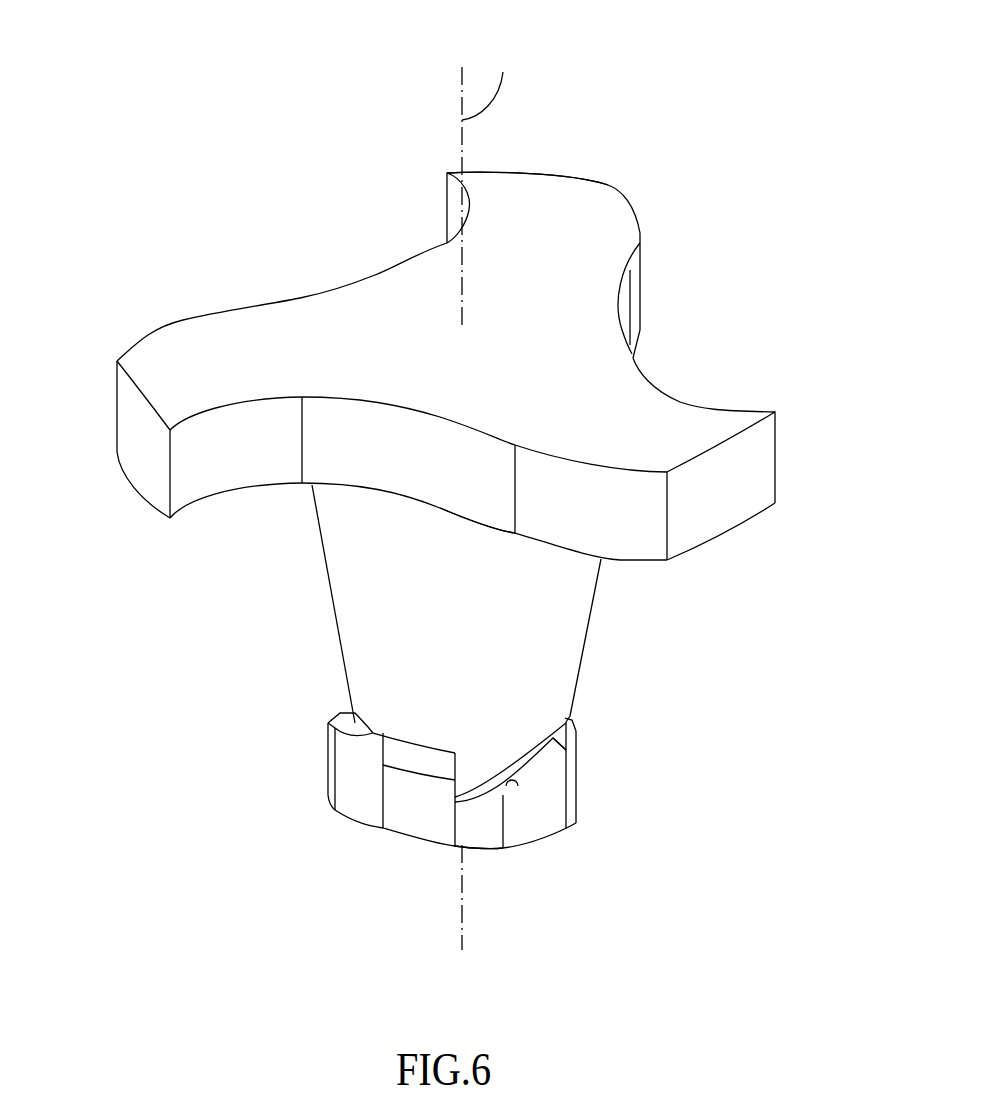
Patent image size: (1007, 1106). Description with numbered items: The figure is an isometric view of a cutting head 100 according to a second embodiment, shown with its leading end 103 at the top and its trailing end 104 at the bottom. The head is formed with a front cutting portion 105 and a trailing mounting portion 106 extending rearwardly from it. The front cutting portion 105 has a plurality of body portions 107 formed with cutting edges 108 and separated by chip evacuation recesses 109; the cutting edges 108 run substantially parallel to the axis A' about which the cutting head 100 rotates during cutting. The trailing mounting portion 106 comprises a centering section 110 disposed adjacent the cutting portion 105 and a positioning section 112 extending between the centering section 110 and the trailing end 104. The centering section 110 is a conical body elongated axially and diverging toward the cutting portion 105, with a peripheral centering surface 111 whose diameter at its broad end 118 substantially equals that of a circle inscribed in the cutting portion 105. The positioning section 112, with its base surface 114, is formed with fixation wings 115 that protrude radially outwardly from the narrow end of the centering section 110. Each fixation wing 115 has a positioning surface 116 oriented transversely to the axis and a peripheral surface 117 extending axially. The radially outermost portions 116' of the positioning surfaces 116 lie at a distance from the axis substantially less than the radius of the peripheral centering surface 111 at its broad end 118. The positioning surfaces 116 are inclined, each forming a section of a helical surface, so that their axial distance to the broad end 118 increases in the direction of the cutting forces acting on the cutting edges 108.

The cutting head 100 is at (768, 293).
The leading end 103 is at (648, 187).
The trailing end 104 is at (394, 843).
The front cutting portion 105 is at (743, 542).
The trailing mounting portion 106 is at (690, 699).
The body portion 107 is at (550, 200).
The cutting edge 108 is at (447, 217).
The chip evacuation recess 109 is at (313, 252).
The centering section 110 is at (566, 637).
The peripheral centering surface 111 is at (368, 640).
The positioning section 112 is at (300, 797).
The base surface 114 is at (483, 855).
The fixation wing 115 is at (336, 823).
The positioning surface 116 is at (456, 754).
The radially outermost portion 116' is at (591, 854).
The peripheral surface 117 is at (557, 818).
The broad end 118 is at (427, 515).